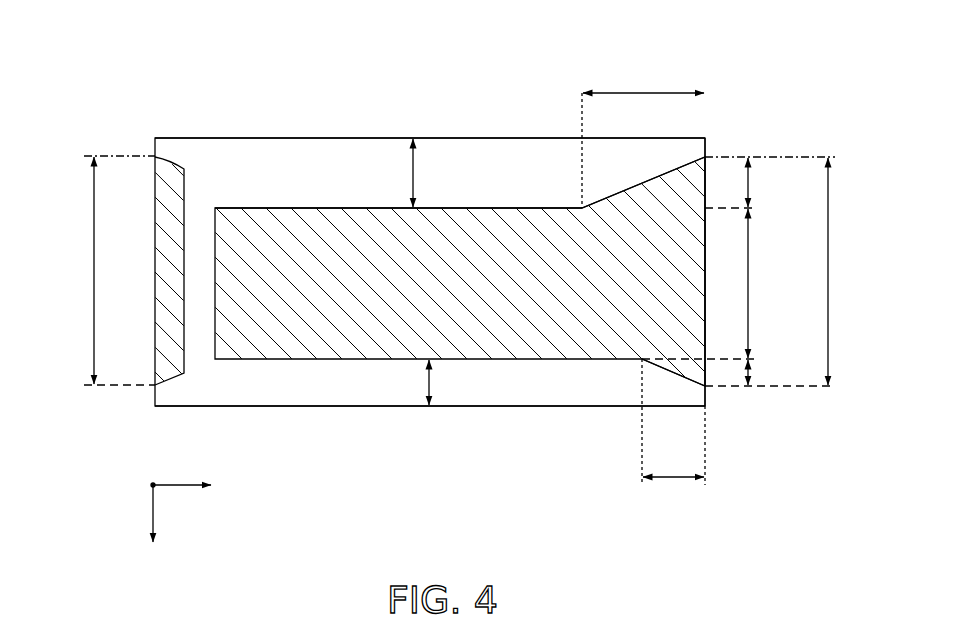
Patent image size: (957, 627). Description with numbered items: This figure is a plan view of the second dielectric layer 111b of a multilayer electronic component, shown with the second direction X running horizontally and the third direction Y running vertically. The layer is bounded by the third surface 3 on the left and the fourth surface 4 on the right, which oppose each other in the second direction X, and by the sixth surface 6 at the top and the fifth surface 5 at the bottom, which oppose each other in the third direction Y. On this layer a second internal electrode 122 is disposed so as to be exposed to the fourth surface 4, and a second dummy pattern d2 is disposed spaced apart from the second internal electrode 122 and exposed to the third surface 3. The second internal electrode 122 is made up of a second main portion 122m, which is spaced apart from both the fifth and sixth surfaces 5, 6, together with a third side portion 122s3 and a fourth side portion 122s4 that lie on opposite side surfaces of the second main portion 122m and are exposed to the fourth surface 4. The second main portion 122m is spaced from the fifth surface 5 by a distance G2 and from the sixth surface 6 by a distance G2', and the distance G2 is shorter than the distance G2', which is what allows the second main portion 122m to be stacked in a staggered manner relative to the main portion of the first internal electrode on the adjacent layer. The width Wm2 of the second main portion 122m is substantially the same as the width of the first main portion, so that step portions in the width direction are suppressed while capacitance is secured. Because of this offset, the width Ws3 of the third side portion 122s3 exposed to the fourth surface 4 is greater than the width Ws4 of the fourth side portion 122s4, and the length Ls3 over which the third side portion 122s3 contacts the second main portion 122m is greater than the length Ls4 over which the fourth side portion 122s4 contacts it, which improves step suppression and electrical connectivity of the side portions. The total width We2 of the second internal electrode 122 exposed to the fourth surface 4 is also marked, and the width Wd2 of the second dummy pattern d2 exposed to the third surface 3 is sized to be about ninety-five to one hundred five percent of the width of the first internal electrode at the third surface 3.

The third surface 3 is at (150, 140).
The fourth surface 4 is at (708, 145).
The fifth surface 5 is at (314, 409).
The sixth surface 6 is at (378, 136).
The second dielectric layer 111b is at (512, 156).
The second internal electrode 122 is at (460, 343).
The second main portion 122m is at (613, 342).
The third side portion 122s3 is at (672, 188).
The fourth side portion 122s4 is at (678, 367).
The second dummy pattern d2 is at (158, 226).
The width of the second dummy pattern Wd2 is at (97, 270).
The distance from the second main portion to the sixth surface G2' is at (436, 173).
The distance from the second main portion to the fifth surface G2 is at (450, 382).
The contact length of the third side portion Ls3 is at (643, 137).
The contact length of the fourth side portion Ls4 is at (673, 434).
The width of the third side portion Ws3 is at (770, 182).
The width of the second main portion Wm2 is at (728, 284).
The width of the fourth side portion Ws4 is at (770, 373).
The width of the second internal electrode We2 is at (855, 271).
The second direction X is at (195, 485).
The third direction Y is at (152, 528).